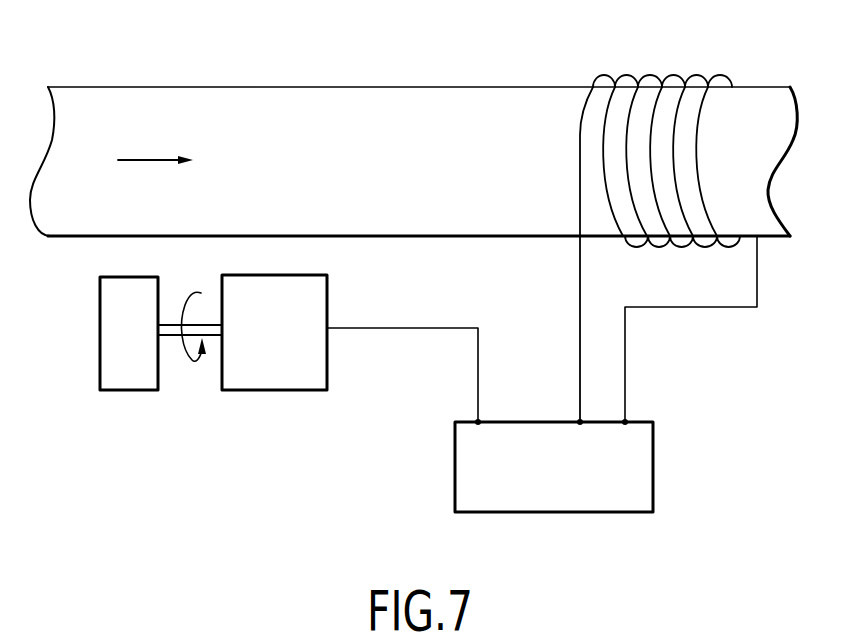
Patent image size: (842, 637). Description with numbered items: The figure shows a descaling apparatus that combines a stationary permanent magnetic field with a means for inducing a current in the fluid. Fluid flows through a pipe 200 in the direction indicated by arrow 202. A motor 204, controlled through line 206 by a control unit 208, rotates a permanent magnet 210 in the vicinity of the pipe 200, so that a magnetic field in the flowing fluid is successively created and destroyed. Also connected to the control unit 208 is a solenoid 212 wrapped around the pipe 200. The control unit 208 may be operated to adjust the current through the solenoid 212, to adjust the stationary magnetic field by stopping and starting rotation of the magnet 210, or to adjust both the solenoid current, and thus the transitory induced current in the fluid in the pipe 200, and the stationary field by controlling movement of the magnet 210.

The pipe 200 is at (352, 87).
The arrow 202 is at (140, 160).
The motor 204 is at (272, 391).
The line 206 is at (406, 329).
The control unit 208 is at (547, 512).
The permanent magnet 210 is at (100, 318).
The solenoid 212 is at (719, 78).